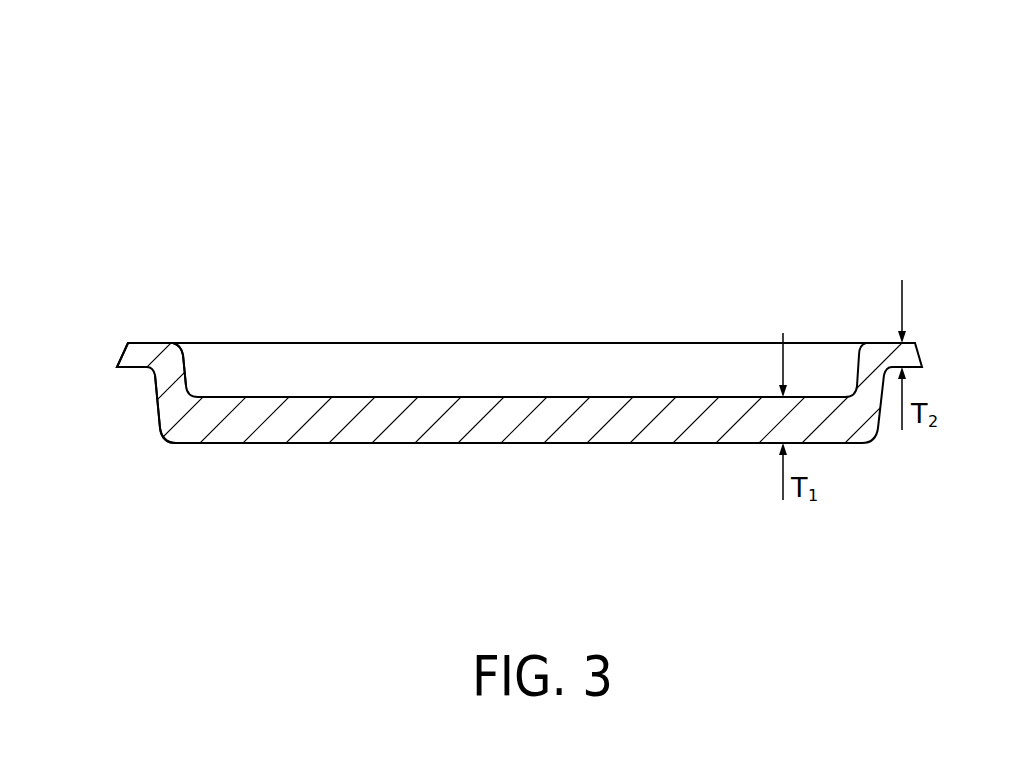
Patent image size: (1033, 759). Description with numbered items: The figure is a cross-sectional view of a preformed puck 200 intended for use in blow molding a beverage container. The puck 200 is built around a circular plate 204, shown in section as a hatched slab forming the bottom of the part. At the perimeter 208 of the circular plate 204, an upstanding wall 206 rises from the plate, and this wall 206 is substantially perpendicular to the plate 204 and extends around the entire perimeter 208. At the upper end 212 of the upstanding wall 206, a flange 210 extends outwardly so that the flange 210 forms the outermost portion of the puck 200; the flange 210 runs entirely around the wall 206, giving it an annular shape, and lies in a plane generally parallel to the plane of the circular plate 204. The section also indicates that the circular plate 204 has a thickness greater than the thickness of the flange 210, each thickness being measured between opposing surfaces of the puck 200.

The preformed puck 200 is at (213, 112).
The circular plate 204 is at (560, 408).
The upstanding wall 206 is at (170, 377).
The perimeter 208 is at (158, 422).
The flange 210 is at (130, 350).
The upper end 212 is at (172, 343).